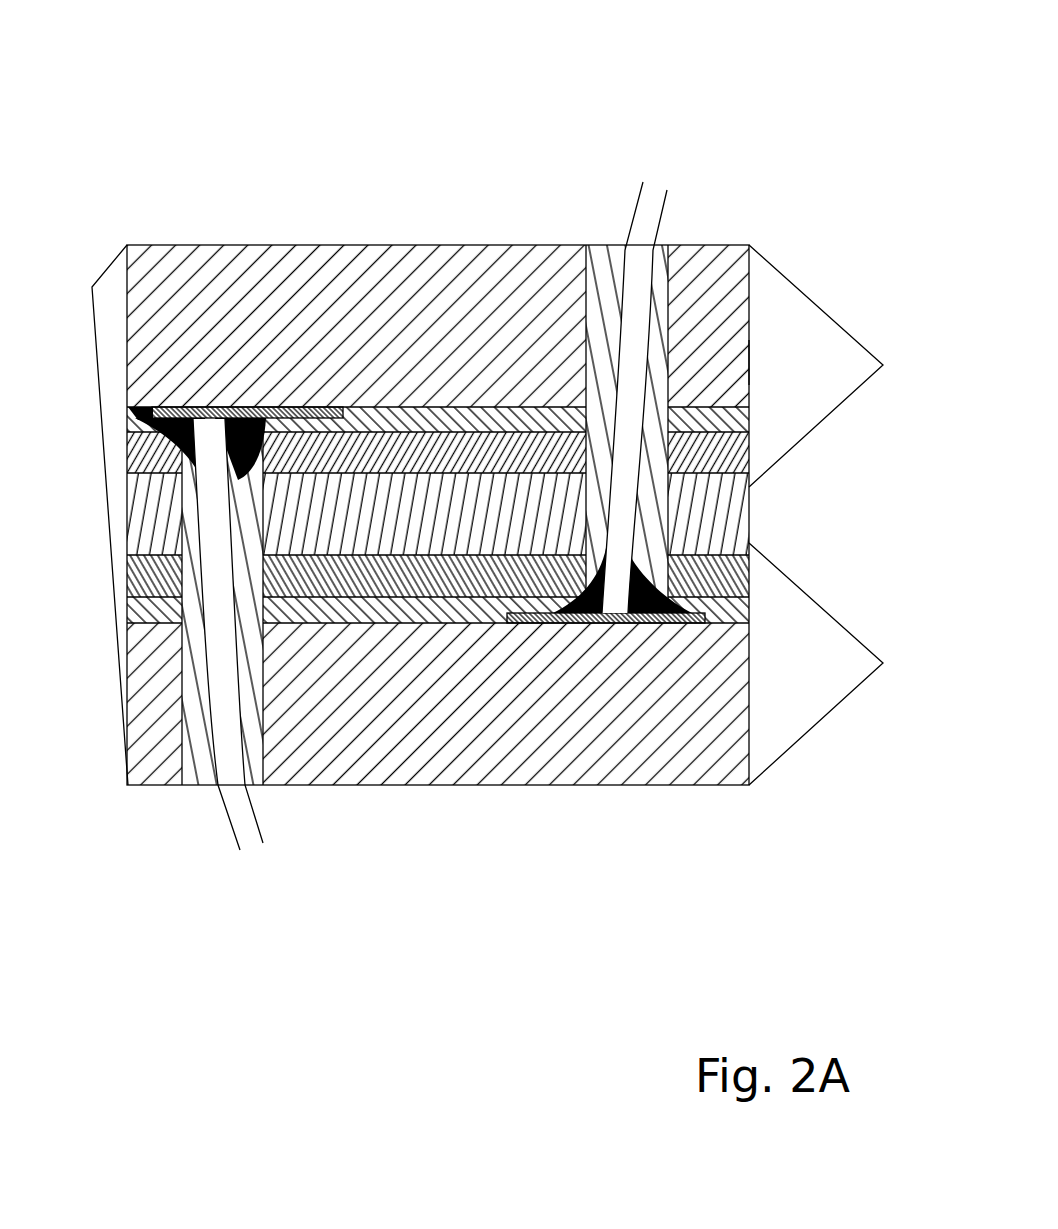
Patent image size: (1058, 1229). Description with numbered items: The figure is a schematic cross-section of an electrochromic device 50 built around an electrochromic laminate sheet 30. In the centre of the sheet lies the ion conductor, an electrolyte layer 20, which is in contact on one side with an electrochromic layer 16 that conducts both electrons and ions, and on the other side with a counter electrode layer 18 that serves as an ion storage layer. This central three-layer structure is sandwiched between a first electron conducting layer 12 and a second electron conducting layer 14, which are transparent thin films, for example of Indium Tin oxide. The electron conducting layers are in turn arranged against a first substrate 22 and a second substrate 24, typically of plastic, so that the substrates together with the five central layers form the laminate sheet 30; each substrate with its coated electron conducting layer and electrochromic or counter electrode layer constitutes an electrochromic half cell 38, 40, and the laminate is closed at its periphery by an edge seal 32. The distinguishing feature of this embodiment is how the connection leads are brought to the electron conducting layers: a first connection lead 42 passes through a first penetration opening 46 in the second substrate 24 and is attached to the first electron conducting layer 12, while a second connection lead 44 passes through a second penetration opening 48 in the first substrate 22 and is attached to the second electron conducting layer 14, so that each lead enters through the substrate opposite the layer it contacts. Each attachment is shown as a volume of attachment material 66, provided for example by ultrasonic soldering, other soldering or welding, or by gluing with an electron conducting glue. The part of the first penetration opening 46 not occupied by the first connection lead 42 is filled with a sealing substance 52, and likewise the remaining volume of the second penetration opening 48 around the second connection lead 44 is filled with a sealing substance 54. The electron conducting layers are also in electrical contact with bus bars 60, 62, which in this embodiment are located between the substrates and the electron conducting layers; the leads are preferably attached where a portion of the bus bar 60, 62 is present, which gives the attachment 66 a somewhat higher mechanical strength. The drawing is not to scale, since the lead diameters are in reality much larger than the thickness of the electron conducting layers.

The first electron conducting layer 12 is at (750, 430).
The second electron conducting layer 14 is at (150, 630).
The electrochromic layer 16 is at (130, 478).
The counter electrode layer 18 is at (155, 580).
The electrolyte layer 20 is at (750, 511).
The first substrate 22 is at (415, 252).
The second substrate 24 is at (430, 773).
The electrochromic laminate sheet 30 is at (91, 515).
The edge seal 32 is at (750, 362).
The electrochromic half cell 38 is at (838, 366).
The electrochromic half cell 40 is at (837, 664).
The first connection lead 42 is at (240, 822).
The second connection lead 44 is at (650, 213).
The first penetration opening 46 is at (252, 775).
The second penetration opening 48 is at (662, 247).
The electrochromic device 50 is at (535, 94).
The sealing substance 52 is at (195, 773).
The sealing substance 54 is at (600, 250).
The bus bar 60 is at (223, 407).
The bus bar 62 is at (593, 623).
The attachment material 66 is at (131, 423).